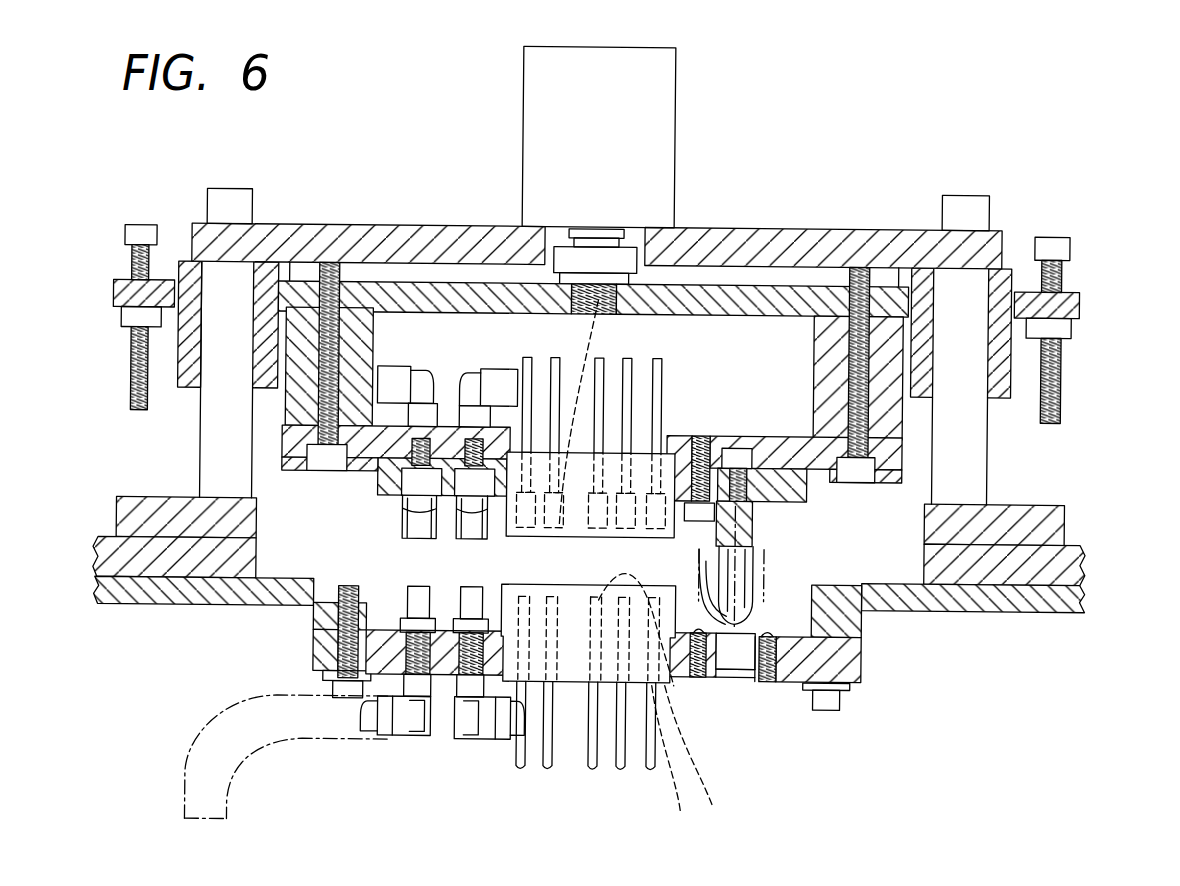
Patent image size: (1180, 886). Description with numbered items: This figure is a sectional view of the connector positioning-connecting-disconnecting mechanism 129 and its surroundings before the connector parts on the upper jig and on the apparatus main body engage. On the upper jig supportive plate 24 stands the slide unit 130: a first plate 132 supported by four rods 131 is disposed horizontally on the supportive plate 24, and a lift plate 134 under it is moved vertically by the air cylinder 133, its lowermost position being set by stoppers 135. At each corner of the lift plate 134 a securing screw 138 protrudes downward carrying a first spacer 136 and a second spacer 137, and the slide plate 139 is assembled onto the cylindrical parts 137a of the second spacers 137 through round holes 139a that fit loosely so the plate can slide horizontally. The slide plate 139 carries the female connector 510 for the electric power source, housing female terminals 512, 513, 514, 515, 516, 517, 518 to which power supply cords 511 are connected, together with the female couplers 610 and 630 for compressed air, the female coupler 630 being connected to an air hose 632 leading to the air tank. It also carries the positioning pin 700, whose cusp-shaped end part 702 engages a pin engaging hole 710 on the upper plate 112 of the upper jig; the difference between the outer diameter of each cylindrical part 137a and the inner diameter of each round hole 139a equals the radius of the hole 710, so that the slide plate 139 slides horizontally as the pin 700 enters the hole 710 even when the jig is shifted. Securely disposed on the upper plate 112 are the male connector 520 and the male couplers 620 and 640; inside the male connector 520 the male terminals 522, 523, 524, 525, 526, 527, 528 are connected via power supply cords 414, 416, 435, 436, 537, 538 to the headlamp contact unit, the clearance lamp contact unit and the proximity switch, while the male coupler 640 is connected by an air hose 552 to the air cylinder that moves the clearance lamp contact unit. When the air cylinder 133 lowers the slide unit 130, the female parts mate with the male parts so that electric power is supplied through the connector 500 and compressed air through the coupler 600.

The upper jig supportive plate 24 is at (117, 516).
The upper plate 112 is at (106, 609).
The connector positioning-connecting-disconnecting mechanism 129 is at (728, 374).
The slide unit 130 is at (594, 286).
The rods 131 is at (285, 441).
The first plate 132 is at (287, 227).
The air cylinder 133 is at (672, 96).
The lift plate 134 is at (112, 296).
The stoppers 135 is at (128, 353).
The first spacer 136 is at (287, 407).
The second spacer 137 is at (289, 474).
The cylindrical part 137a is at (300, 464).
The securing screw 138 is at (329, 474).
The slide plate 139 is at (782, 437).
The round holes 139a is at (290, 432).
The electric power supply cord 414 is at (630, 770).
The electric power supply cord 416 is at (601, 762).
The electric power supply cord 435 is at (582, 784).
The electric power supply cord 436 is at (557, 768).
The connector 500 is at (746, 695).
The female connector 510 is at (702, 612).
The power supply cords 511 is at (524, 361).
The female terminal 512 is at (758, 545).
The female terminal 513 is at (753, 521).
The female terminal 514 is at (615, 430).
The female terminal 515 is at (615, 428).
The female terminal 516 is at (615, 428).
The female terminal 517 is at (664, 249).
The female terminal 518 is at (597, 300).
The male connector 520 is at (680, 685).
The pipe 522 is at (706, 756).
The male terminal 523 is at (679, 763).
The male terminal 524 is at (610, 592).
The male terminal 525 is at (608, 442).
The male terminal 526 is at (560, 584).
The male terminal 527 is at (511, 609).
The male terminal 528 is at (522, 584).
The electric power supply cord 537 is at (527, 770).
The electric power supply cord 538 is at (529, 770).
The air hose 552 is at (232, 710).
The coupler 600 is at (463, 643).
The female coupler 610 is at (465, 542).
The male coupler 620 is at (487, 700).
The female coupler 630 is at (342, 603).
The air hose 632 is at (385, 367).
The male coupler 640 is at (365, 656).
The positioning pin 700 is at (760, 599).
The end part 702 is at (840, 669).
The pin engaging hole 710 is at (770, 683).